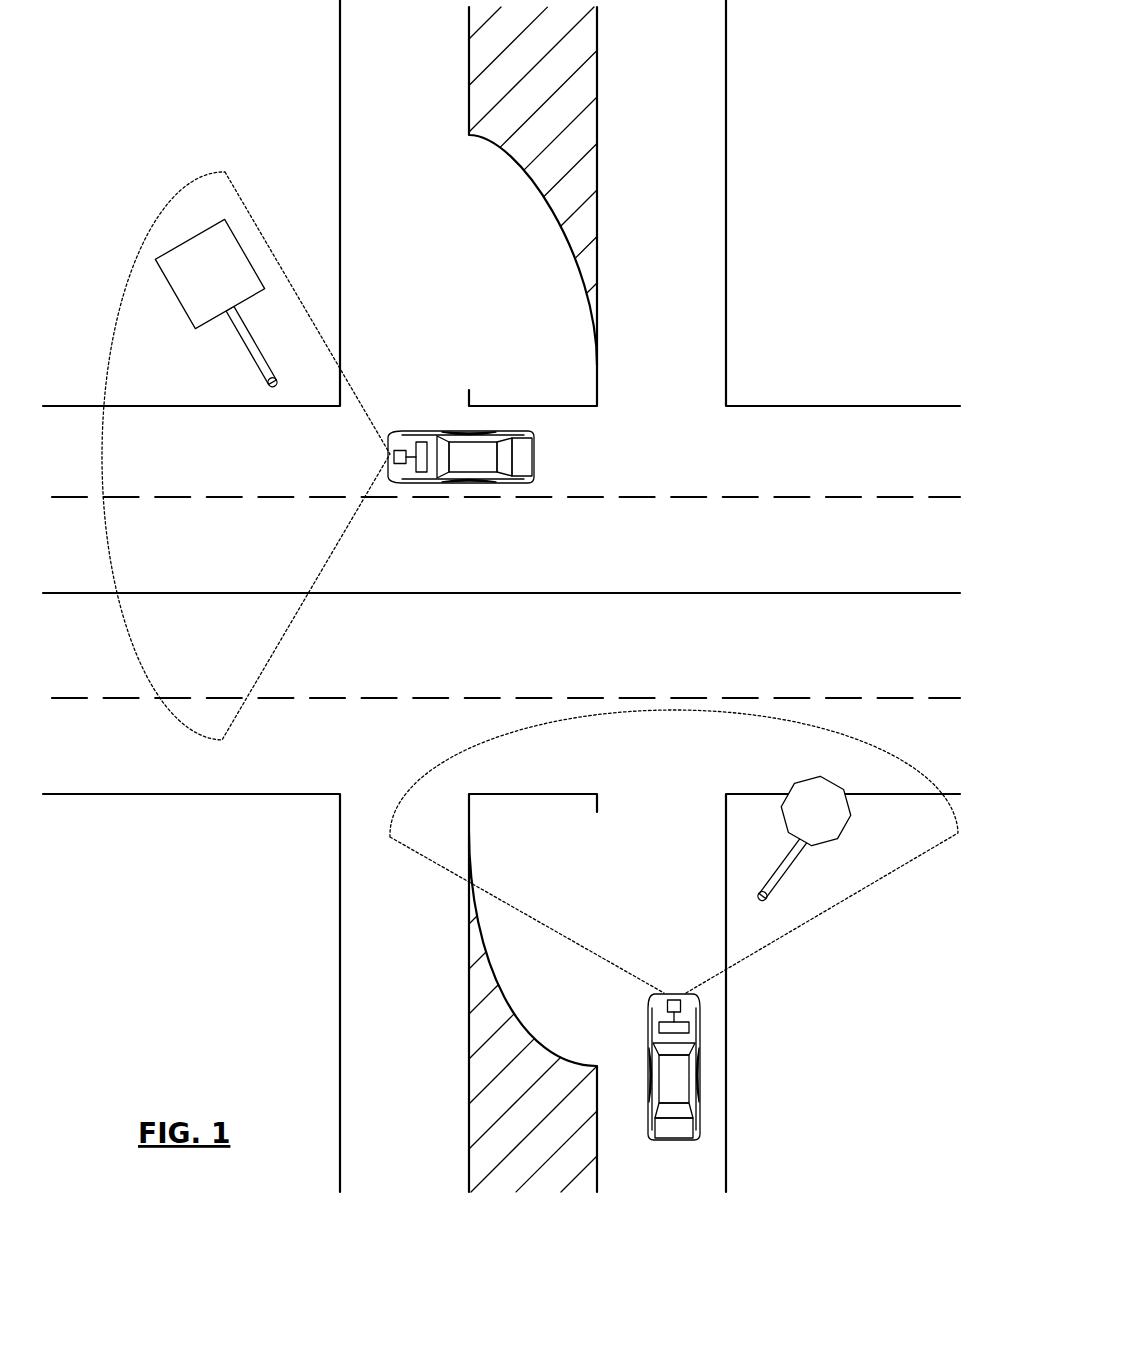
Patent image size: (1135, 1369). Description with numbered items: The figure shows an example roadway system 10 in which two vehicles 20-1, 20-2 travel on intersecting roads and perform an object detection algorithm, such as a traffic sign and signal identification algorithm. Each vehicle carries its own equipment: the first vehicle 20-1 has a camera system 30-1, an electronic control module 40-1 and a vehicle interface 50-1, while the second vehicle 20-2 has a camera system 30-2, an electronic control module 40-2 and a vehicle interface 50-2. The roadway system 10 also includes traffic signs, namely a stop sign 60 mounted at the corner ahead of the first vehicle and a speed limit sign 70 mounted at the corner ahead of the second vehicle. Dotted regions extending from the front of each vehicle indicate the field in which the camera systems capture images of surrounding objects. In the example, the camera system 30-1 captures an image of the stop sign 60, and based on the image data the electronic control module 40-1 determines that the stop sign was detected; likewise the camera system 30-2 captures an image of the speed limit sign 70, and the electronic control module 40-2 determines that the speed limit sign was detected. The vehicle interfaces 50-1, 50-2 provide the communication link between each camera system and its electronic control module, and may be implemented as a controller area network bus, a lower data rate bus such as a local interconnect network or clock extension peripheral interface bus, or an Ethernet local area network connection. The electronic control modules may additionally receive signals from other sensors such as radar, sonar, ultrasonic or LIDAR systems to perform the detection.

The roadway system 10 is at (178, 70).
The vehicle 20-1 is at (650, 1040).
The vehicle 20-2 is at (458, 432).
The camera system 30-1 is at (674, 991).
The camera system 30-2 is at (393, 456).
The electronic control module 40-1 is at (690, 1027).
The electronic control module 40-2 is at (422, 472).
The vehicle interface 50-1 is at (681, 1013).
The vehicle interface 50-2 is at (408, 463).
The stop sign 60 is at (851, 817).
The speed limit sign 70 is at (184, 310).